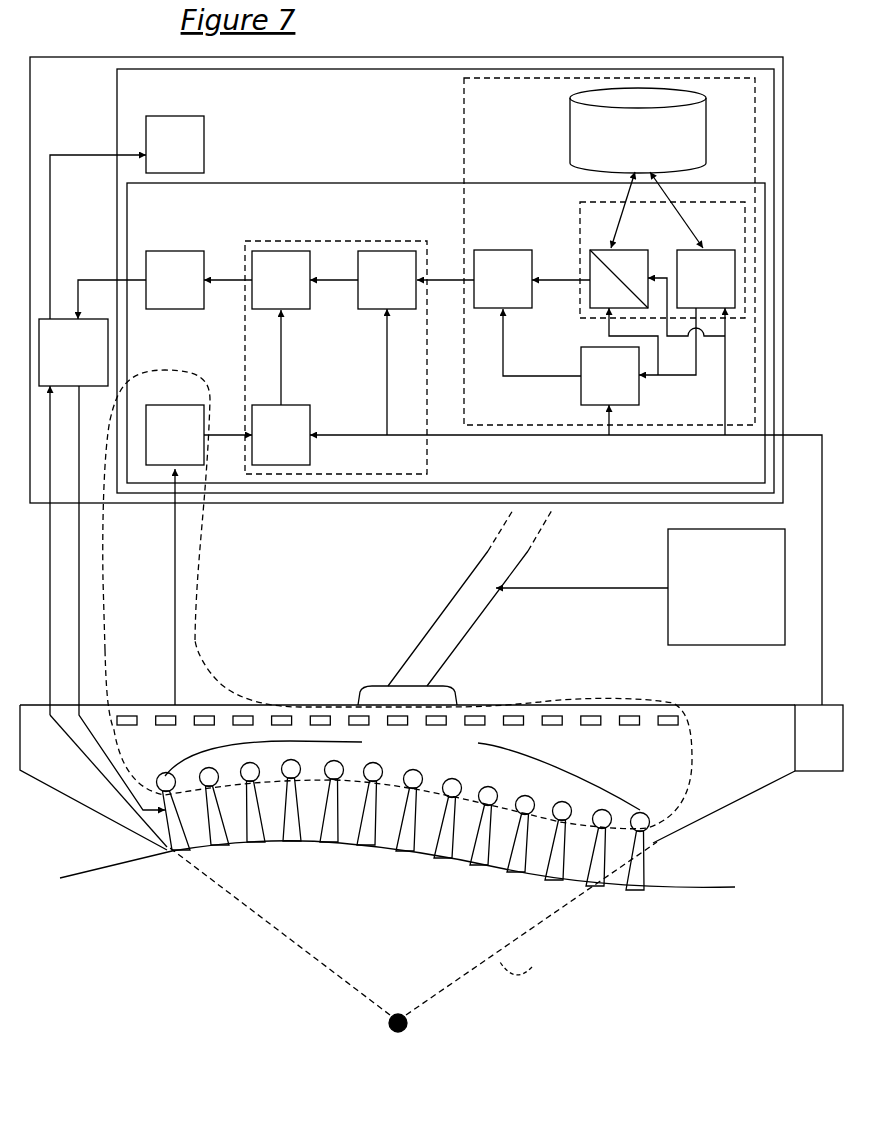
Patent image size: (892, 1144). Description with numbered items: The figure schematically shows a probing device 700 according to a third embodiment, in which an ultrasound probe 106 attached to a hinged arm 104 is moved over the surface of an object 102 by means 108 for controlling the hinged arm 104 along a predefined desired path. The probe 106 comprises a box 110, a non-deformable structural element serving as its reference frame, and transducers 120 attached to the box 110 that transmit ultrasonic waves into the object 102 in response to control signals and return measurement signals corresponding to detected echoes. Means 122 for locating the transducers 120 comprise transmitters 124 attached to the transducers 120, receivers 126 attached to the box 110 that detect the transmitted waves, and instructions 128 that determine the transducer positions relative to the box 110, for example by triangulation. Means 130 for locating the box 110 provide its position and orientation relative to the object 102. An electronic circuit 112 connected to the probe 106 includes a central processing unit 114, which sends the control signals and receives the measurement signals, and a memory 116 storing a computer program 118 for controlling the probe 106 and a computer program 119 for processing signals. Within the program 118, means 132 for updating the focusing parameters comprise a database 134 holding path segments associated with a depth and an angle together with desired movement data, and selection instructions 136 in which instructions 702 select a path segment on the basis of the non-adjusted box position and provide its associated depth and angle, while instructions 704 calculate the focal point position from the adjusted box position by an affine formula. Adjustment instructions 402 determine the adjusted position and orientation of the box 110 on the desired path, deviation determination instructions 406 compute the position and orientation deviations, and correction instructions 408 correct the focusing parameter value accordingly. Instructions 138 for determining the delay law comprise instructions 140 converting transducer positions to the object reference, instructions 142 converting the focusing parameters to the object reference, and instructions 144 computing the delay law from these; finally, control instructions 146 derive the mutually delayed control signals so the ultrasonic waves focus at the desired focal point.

The probing device 700 is at (431, 524).
The electronic circuit 112 is at (406, 280).
The memory 116 is at (445, 281).
The computer program for controlling the probe 118 is at (446, 333).
The computer program for processing signals 119 is at (175, 144).
The means for updating focusing parameters 132 is at (609, 251).
The database 134 is at (705, 131).
The selection instructions 136 is at (662, 260).
The instructions for selecting a path segment 702 is at (619, 279).
The instructions for calculating the focal point position 704 is at (619, 279).
The adjustment instructions 402 is at (706, 279).
The correction instructions 408 is at (503, 279).
The deviation determination instructions 406 is at (610, 376).
The control instructions 146 is at (175, 280).
The instructions for determining the delay law 144 is at (281, 280).
The instructions for determining focusing parameters in relation to the object 142 is at (387, 280).
The instructions for determining the positions of the transducers 128 is at (175, 555).
The instructions for determining transducer positions in relation to the object 140 is at (281, 435).
The instructions for determining a delay law 138 is at (336, 357).
The central processing unit 114 is at (103, 501).
The means for controlling the hinged arm 108 is at (726, 587).
The hinged arm 104 is at (528, 598).
The ultrasound probe 106 is at (322, 691).
The means for locating the box 130 is at (819, 738).
The box 110 is at (98, 812).
The object 102 is at (116, 901).
The transmitters 124 is at (397, 763).
The transducers 120 is at (735, 887).
The means for locating the transducers 122 is at (205, 552).
The receivers 126 is at (595, 736).